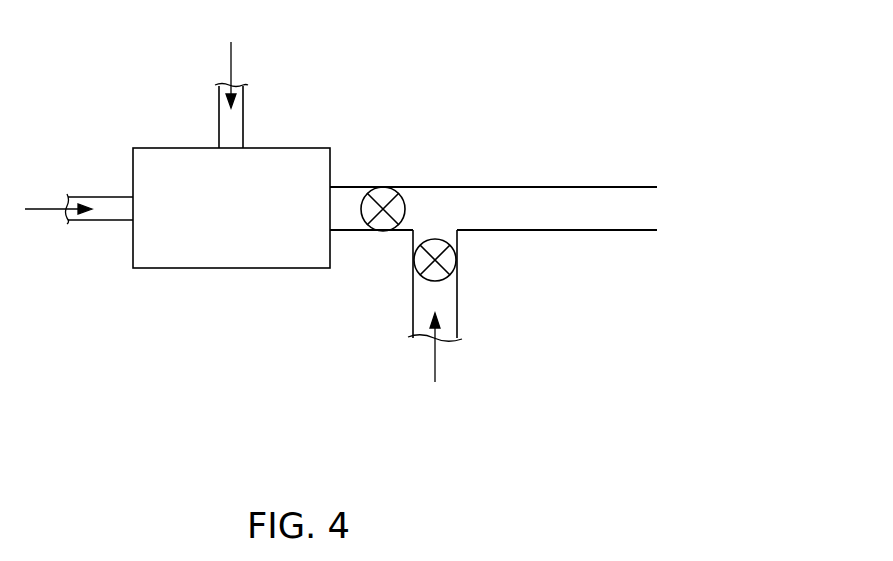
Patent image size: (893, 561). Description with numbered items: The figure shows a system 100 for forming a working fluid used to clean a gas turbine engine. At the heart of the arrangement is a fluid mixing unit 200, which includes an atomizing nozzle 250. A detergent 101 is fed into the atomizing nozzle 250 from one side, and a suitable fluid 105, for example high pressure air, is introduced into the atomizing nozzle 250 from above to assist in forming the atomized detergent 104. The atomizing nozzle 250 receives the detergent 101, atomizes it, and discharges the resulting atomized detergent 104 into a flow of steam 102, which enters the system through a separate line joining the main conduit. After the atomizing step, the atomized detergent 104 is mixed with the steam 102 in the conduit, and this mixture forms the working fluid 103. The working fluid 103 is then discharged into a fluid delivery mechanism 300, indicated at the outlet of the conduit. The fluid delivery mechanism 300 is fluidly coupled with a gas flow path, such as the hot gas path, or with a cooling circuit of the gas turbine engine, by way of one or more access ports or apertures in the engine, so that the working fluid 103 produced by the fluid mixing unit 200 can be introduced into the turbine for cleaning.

The system 100 is at (541, 38).
The detergent 101 is at (114, 210).
The steam 102 is at (428, 360).
The working fluid 103 is at (535, 289).
The atomized detergent 104 is at (349, 180).
The fluid 105 is at (232, 63).
The fluid mixing unit 200 is at (68, 388).
The atomizing nozzle 250 is at (252, 221).
The fluid delivery mechanism 300 is at (596, 179).